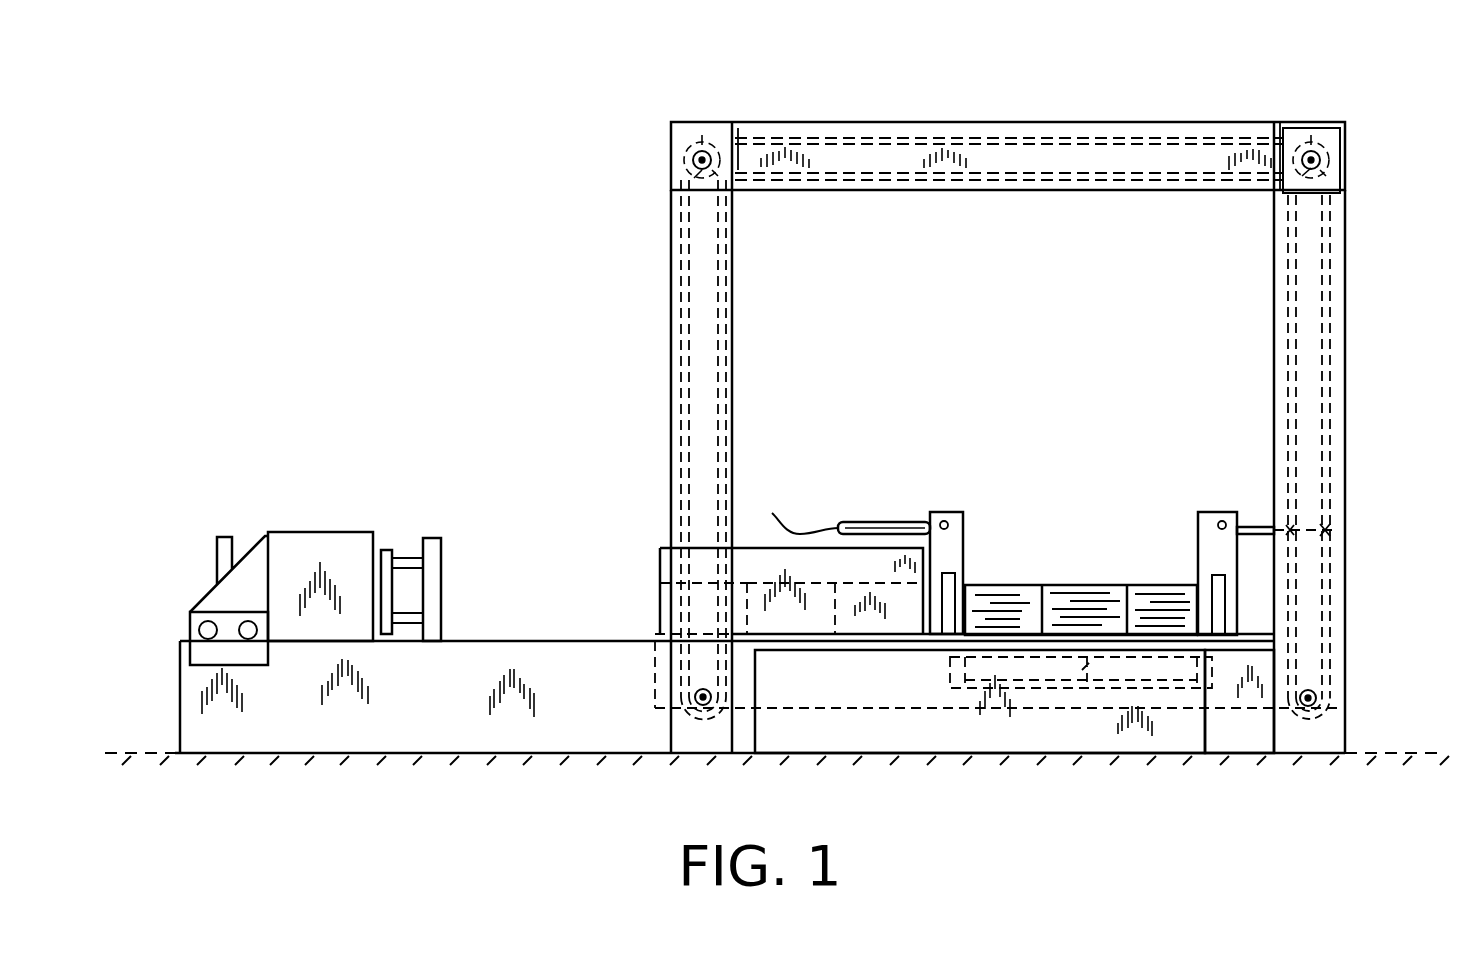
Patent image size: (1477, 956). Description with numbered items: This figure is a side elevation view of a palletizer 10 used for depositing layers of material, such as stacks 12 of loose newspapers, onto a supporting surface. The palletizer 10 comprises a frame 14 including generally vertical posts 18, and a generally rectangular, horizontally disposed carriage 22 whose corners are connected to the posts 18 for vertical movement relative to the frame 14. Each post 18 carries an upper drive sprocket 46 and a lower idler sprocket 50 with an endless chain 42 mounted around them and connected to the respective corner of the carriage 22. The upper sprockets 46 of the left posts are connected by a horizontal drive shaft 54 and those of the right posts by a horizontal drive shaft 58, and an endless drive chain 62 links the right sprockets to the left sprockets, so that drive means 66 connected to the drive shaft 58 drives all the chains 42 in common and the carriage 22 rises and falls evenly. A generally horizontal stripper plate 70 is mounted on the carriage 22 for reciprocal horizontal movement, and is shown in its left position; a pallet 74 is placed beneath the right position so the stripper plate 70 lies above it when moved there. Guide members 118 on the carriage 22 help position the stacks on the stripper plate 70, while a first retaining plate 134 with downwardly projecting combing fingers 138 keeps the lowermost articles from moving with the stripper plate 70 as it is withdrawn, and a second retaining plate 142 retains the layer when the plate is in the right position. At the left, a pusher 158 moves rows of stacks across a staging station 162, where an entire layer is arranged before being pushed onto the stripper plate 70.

The palletizer 10 is at (886, 114).
The stacks 12 is at (1072, 583).
The frame 14 is at (1369, 306).
The posts 18 is at (703, 411).
The carriage 22 is at (1240, 685).
The endless chain 42 is at (681, 341).
The upper drive sprocket 46 is at (706, 140).
The lower idler sprocket 50 is at (690, 695).
The horizontal drive shaft 54 is at (672, 183).
The horizontal drive shaft 58 is at (1303, 200).
The endless drive chain 62 is at (1058, 130).
The drive means 66 is at (1330, 126).
The stripper plate 70 is at (802, 655).
The pallet 74 is at (1072, 665).
The guide members 118 is at (882, 550).
The first retaining plate 134 is at (915, 522).
The combing fingers 138 is at (840, 508).
The second retaining plate 142 is at (1253, 523).
The pusher 158 is at (335, 553).
The staging station 162 is at (546, 627).